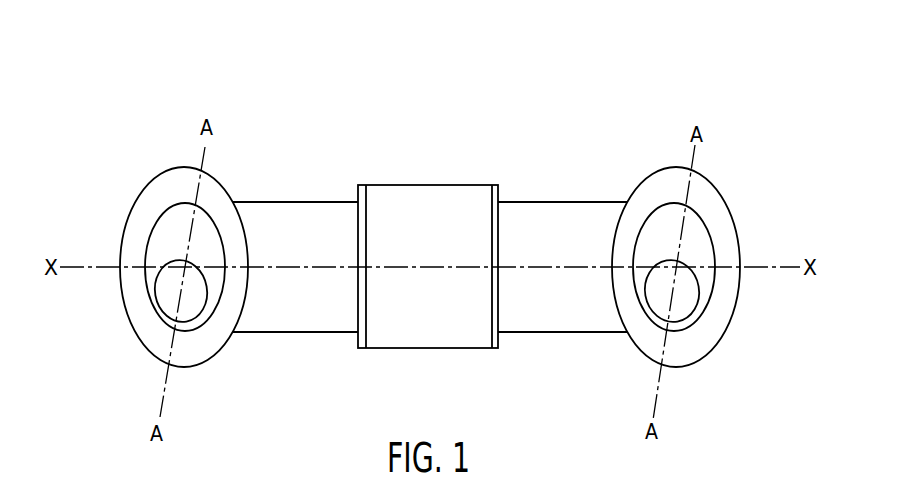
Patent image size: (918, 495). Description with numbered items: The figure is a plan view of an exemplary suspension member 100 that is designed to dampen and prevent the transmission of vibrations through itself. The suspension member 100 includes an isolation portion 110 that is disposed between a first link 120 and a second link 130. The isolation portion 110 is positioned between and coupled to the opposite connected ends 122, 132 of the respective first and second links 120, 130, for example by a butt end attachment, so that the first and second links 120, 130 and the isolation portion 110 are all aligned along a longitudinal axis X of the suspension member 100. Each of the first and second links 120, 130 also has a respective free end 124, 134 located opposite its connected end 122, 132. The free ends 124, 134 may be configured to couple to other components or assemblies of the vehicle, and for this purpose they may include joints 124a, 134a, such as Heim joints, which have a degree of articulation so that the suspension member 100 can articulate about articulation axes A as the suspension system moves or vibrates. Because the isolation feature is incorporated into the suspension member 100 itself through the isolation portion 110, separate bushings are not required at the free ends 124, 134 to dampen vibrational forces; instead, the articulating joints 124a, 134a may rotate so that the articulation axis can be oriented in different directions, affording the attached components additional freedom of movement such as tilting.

The suspension member 100 is at (434, 64).
The isolation portion 110 is at (445, 235).
The first link 120 is at (261, 124).
The connected end 122 is at (355, 202).
The free end 124 is at (153, 181).
The joint 124a is at (148, 277).
The second link 130 is at (597, 132).
The connected end 132 is at (503, 202).
The free end 134 is at (708, 181).
The joint 134a is at (705, 287).